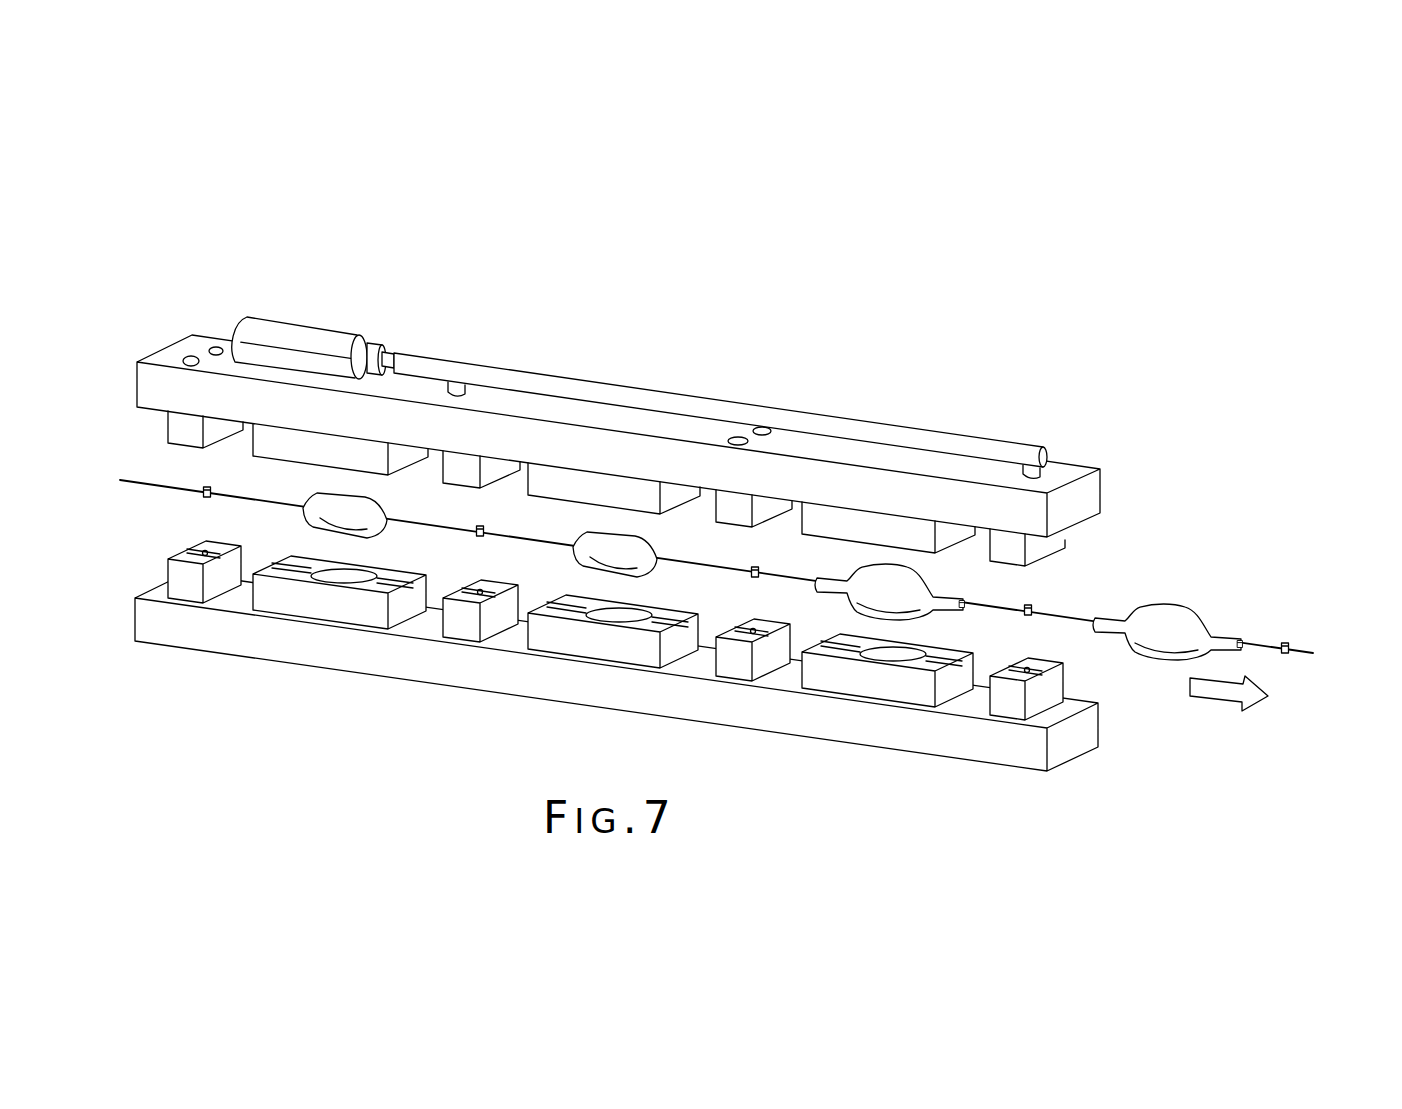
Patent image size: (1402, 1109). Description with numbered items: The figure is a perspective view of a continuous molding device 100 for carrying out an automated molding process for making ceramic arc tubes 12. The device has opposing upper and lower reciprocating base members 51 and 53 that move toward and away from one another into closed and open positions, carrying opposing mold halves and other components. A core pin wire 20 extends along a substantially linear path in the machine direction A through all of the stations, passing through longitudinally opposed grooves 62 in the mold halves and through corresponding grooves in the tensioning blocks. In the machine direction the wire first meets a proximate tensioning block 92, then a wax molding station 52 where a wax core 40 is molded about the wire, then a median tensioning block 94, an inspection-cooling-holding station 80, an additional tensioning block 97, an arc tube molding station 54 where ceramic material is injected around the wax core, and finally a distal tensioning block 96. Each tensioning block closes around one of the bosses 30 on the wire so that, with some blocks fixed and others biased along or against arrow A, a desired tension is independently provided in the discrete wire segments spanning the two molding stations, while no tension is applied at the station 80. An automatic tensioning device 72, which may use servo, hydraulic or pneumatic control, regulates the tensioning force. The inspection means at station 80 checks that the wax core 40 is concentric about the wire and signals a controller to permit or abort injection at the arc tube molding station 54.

The continuous molding device 100 is at (218, 280).
The automatic tensioning device 72 is at (307, 328).
The grooves 62 is at (177, 428).
The wax core 40 is at (357, 500).
The first base member 51 is at (1098, 486).
The core pin wire 20 is at (145, 488).
The ceramic arc tube 12 is at (1170, 620).
The bosses 30 is at (1031, 604).
The proximate tensioning block 92 is at (195, 583).
The wax molding station 52 is at (274, 600).
The median tensioning block 94 is at (465, 628).
The inspection-cooling-holding station 80 is at (558, 645).
The additional tensioning block 97 is at (762, 666).
The arc tube molding station 54 is at (829, 684).
The distal tensioning block 96 is at (1010, 707).
The second base member 53 is at (1076, 757).
The machine direction A is at (1208, 700).